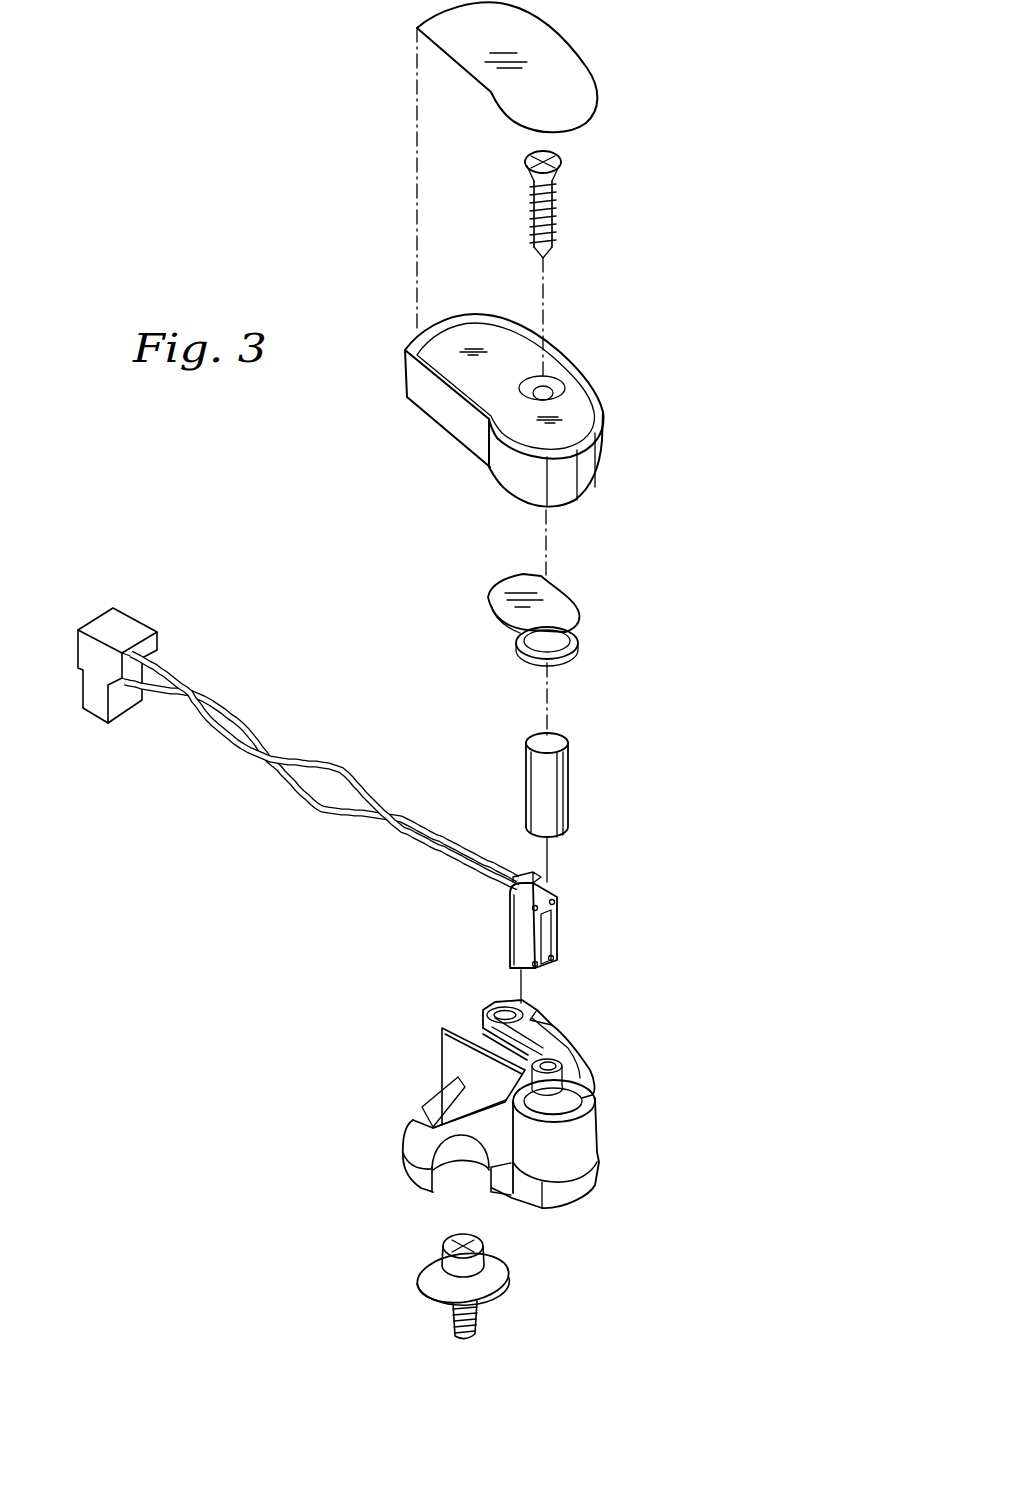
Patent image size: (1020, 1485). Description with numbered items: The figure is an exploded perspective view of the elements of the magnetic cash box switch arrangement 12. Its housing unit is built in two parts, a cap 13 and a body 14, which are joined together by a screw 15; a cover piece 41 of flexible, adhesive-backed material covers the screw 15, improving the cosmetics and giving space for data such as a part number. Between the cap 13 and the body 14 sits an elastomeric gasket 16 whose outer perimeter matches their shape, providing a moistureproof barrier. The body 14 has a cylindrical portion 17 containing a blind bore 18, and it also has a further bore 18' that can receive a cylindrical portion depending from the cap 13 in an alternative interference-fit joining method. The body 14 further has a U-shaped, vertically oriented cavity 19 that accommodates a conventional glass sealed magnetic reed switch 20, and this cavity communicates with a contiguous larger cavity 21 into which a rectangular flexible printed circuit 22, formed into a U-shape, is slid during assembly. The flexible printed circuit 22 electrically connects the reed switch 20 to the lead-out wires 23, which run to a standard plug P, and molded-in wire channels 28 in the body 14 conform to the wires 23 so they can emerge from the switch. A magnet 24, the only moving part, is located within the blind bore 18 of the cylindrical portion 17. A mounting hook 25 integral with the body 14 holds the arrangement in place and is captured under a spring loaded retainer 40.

The magnetic cash box switch arrangement 12 is at (413, 563).
The cover piece 41 is at (580, 97).
The screw 15 is at (557, 205).
The cap 13 is at (580, 487).
The elastomeric gasket 16 is at (557, 605).
The magnet 24 is at (553, 787).
The plug P is at (99, 702).
The lead-out wires 23 is at (294, 752).
The flexible printed circuit 22 is at (510, 935).
The magnetic reed switch 20 is at (548, 934).
The body 14 is at (550, 1032).
The wire channels 28 is at (503, 1047).
The bore 18' is at (451, 999).
The U-shaped cavity 19 is at (558, 1080).
The larger cavity 21 is at (500, 1090).
The cylindrical portion 17 is at (577, 1163).
The blind bore 18 is at (593, 1106).
The mounting hook 25 is at (423, 1157).
The spring loaded retainer 40 is at (524, 1282).